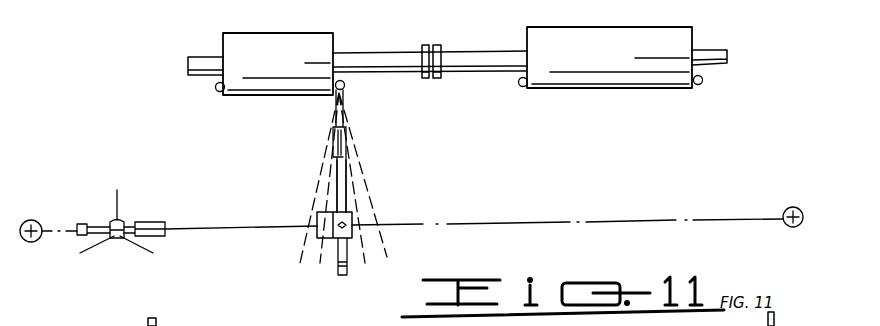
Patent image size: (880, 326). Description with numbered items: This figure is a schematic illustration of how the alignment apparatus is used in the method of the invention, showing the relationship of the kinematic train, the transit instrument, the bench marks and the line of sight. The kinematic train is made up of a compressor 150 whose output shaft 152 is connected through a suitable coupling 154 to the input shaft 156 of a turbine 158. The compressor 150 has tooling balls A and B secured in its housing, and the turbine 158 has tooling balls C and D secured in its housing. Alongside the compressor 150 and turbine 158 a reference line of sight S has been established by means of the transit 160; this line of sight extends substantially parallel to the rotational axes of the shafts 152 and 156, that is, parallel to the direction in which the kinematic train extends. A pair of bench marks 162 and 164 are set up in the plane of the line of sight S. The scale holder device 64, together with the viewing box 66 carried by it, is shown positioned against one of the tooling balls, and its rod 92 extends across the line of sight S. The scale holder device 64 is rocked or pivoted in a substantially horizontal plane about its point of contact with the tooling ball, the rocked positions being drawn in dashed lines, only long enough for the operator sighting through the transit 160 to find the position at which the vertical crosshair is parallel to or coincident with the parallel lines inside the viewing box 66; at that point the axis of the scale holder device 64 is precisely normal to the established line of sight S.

The compressor 150 is at (287, 42).
The output shaft 152 is at (382, 60).
The coupling 154 is at (436, 78).
The input shaft 156 is at (490, 58).
The turbine 158 is at (590, 35).
The transit 160 is at (144, 214).
The bench mark 162 is at (30, 242).
The bench mark 164 is at (800, 226).
The scale holder device 64 is at (348, 186).
The viewing box 66 is at (318, 236).
The pointer rod 92 is at (342, 168).
The reference line of sight S is at (500, 223).
The tooling ball A is at (221, 92).
The tooling ball B is at (345, 86).
The tooling ball C is at (523, 87).
The tooling ball D is at (699, 85).